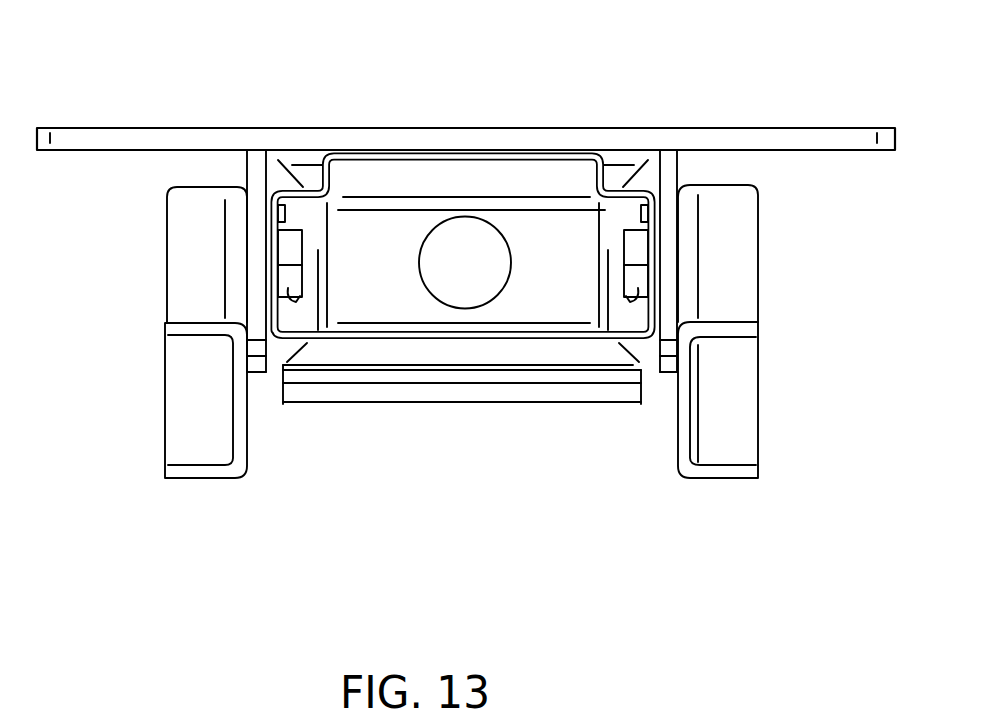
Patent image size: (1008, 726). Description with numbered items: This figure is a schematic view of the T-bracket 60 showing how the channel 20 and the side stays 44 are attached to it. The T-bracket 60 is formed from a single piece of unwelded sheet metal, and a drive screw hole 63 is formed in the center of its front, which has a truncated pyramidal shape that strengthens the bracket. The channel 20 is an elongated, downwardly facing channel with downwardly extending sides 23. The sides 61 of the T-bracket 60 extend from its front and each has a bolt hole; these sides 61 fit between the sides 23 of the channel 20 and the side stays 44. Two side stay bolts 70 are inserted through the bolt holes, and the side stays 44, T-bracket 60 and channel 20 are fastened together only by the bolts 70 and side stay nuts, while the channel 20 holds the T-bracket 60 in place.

The channel 20 is at (572, 150).
The sides 23 is at (645, 288).
The side stays 44 is at (178, 267).
The T-bracket 60 is at (427, 137).
The sides 61 is at (667, 182).
The drive screw hole 63 is at (437, 276).
The side stay bolts 70 is at (302, 298).